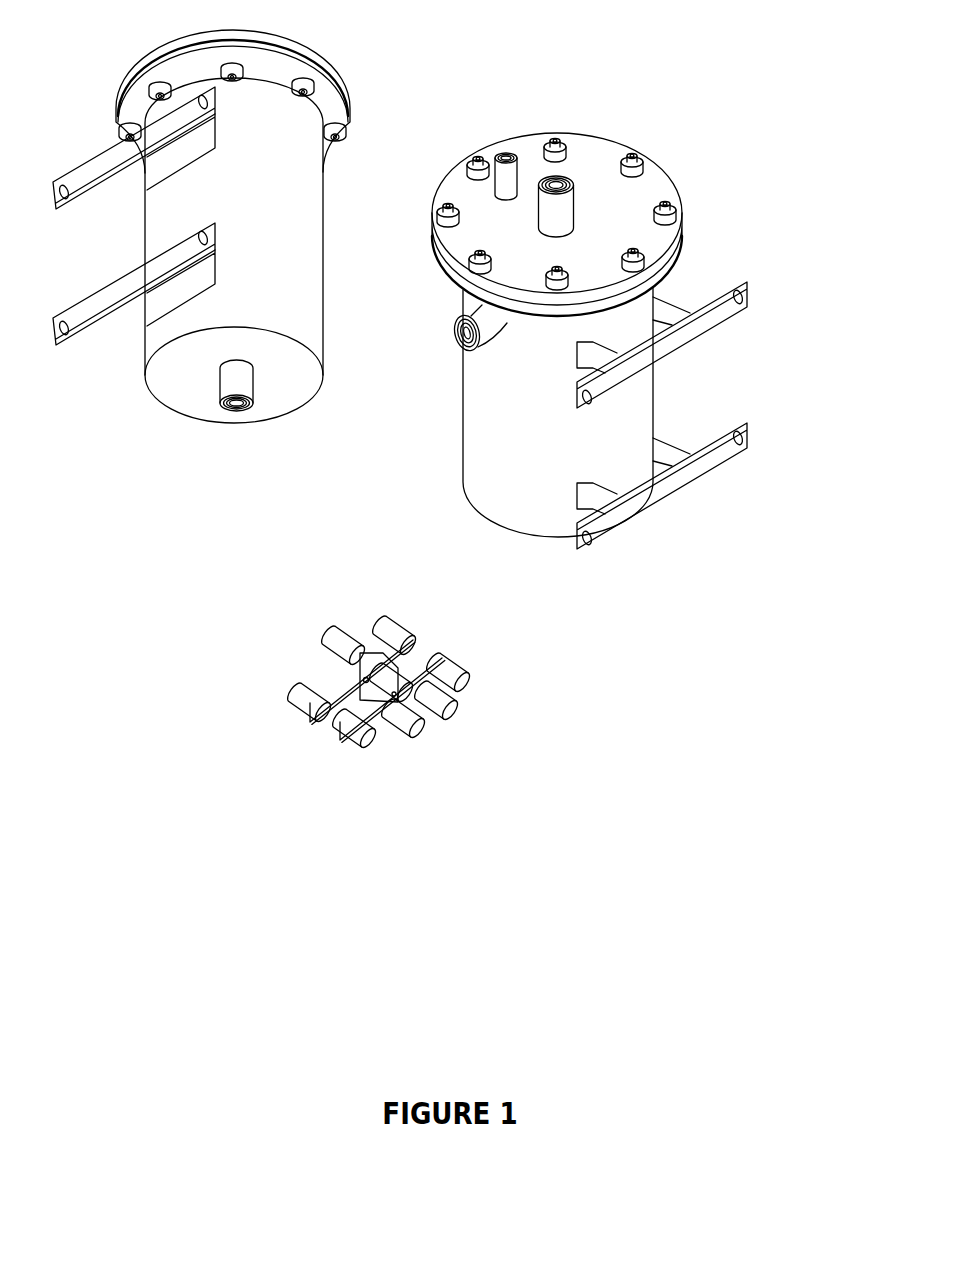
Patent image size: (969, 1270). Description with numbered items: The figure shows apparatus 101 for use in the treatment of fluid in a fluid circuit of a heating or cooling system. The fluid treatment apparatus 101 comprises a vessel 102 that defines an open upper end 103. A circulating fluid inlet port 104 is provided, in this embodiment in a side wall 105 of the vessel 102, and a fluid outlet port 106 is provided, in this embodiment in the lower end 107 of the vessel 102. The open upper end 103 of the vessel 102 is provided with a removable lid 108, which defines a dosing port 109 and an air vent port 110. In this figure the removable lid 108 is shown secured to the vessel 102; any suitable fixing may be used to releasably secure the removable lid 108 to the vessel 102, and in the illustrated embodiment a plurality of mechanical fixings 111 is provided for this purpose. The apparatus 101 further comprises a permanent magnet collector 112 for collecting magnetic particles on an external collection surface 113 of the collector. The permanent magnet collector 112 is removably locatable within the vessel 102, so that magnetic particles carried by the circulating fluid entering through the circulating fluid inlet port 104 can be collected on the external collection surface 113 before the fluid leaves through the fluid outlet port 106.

The fluid treatment apparatus 101 is at (605, 431).
The vessel 102 is at (482, 479).
The open upper end 103 is at (640, 187).
The circulating fluid inlet port 104 is at (479, 305).
The side wall 105 is at (645, 408).
The fluid outlet port 106 is at (251, 385).
The lower end 107 is at (203, 401).
The removable lid 108 is at (650, 194).
The dosing port 109 is at (571, 175).
The air vent port 110 is at (497, 150).
The mechanical fixings 111 is at (684, 204).
The permanent magnet collector 112 is at (305, 742).
The external collection surface 113 is at (312, 662).